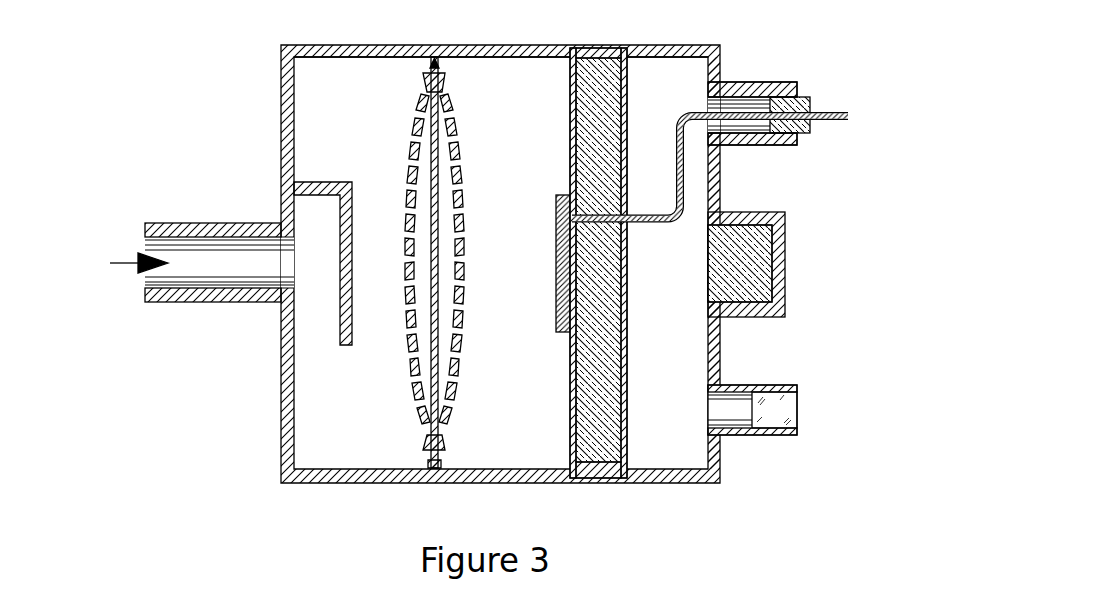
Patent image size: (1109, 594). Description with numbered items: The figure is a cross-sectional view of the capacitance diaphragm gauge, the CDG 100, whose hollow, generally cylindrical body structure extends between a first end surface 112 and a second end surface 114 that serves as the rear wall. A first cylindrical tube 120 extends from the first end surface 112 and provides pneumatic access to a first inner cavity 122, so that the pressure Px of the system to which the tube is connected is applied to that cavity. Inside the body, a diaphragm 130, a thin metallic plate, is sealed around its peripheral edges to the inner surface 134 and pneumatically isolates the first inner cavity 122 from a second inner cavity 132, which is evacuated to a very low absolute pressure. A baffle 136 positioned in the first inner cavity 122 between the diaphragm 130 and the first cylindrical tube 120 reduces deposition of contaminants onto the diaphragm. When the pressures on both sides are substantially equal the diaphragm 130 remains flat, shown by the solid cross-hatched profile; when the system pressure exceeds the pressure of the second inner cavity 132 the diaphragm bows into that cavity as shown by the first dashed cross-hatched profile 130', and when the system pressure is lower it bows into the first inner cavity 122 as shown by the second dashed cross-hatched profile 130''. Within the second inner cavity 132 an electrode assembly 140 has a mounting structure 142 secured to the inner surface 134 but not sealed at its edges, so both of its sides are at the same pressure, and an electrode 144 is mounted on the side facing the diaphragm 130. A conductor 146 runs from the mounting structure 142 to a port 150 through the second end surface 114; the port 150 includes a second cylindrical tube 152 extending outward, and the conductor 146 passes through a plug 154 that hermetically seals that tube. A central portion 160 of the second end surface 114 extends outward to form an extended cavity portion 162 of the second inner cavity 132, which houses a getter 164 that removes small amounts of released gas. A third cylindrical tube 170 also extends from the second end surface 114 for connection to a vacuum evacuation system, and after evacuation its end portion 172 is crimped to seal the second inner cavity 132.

The CDG 100 is at (469, 266).
The first end surface 112 is at (280, 133).
The second end surface 114 is at (721, 373).
The first cylindrical tube 120 is at (213, 223).
The first inner cavity 122 is at (315, 437).
The diaphragm 130 is at (434, 262).
The first dashed cross-hatched profile 130' is at (474, 259).
The second dashed cross-hatched profile 130'' is at (394, 259).
The second inner cavity 132 is at (682, 437).
The inner surface 134 is at (320, 57).
The baffle 136 is at (340, 325).
The electrode assembly 140 is at (668, 245).
The mounting structure 142 is at (570, 438).
The electrode 144 is at (556, 292).
The conductor 146 is at (698, 112).
The port 150 is at (782, 78).
The second cylindrical tube 152 is at (770, 83).
The plug 154 is at (797, 97).
The central portion 160 is at (740, 263).
The extended cavity portion 162 is at (700, 250).
The getter 164 is at (714, 298).
The third cylindrical tube 170 is at (771, 406).
The end portion 172 is at (770, 420).